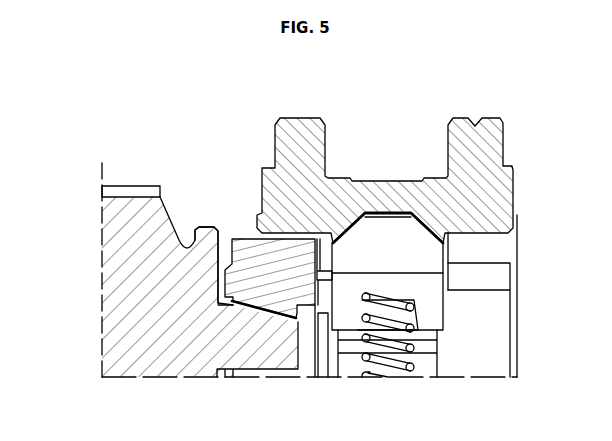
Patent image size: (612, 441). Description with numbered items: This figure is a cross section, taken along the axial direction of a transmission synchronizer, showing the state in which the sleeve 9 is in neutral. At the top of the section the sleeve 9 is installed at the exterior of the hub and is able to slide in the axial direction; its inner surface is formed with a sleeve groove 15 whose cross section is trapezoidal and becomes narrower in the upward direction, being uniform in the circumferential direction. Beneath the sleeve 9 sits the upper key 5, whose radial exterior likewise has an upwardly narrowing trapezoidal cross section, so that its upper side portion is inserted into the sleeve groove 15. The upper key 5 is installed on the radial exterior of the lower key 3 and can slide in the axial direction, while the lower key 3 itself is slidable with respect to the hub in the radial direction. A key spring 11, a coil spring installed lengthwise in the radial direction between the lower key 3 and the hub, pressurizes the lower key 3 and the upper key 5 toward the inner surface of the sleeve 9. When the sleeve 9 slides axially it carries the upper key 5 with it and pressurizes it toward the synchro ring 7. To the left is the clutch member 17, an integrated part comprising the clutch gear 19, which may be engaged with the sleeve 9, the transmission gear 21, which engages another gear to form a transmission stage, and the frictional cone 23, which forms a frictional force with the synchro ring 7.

The lower key 3 is at (430, 309).
The upper key 5 is at (426, 267).
The synchro ring 7 is at (243, 250).
The sleeve 9 is at (304, 130).
The key spring 11 is at (408, 347).
The sleeve groove 15 is at (446, 239).
The clutch member 17 is at (128, 292).
The clutch gear 19 is at (207, 227).
The transmission gear 21 is at (131, 189).
The frictional cone 23 is at (245, 305).